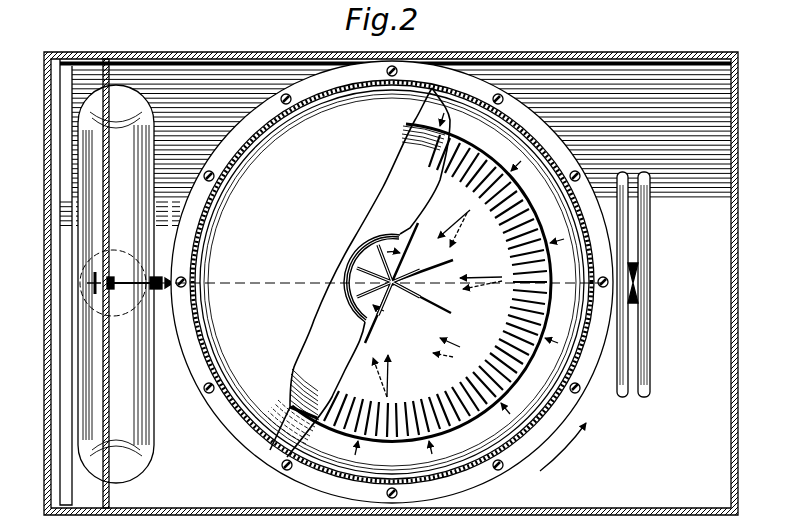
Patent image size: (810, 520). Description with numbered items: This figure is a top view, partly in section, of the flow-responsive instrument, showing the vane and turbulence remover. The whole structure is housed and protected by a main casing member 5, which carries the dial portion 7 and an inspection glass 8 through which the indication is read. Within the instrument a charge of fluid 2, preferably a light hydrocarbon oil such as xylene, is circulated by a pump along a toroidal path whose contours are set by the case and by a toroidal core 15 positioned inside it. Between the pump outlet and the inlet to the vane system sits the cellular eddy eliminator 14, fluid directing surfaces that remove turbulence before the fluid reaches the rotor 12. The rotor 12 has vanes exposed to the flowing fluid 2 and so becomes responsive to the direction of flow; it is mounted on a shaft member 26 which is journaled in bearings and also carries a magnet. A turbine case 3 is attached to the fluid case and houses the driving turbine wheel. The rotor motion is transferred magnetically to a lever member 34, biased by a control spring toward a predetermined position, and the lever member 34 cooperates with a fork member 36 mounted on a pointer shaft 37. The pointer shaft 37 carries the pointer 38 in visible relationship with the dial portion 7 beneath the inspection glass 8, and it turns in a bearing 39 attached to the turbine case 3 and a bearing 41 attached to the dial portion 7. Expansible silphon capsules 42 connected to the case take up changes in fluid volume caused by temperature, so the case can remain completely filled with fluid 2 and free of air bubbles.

The fluid 2 is at (576, 357).
The turbine case 3 is at (260, 403).
The main casing member 5 is at (601, 59).
The dial portion 7 is at (112, 88).
The inspection glass 8 is at (48, 181).
The rotor 12 is at (410, 334).
The eddy eliminator 14 is at (348, 400).
The toroidal core 15 is at (437, 172).
The shaft member 26 is at (372, 315).
The lever member 34 is at (507, 280).
The fork member 36 is at (163, 292).
The pointer shaft 37 is at (96, 281).
The pointer 38 is at (100, 287).
The bearing 39 is at (163, 277).
The bearing 41 is at (110, 303).
The silphon capsules 42 is at (651, 283).